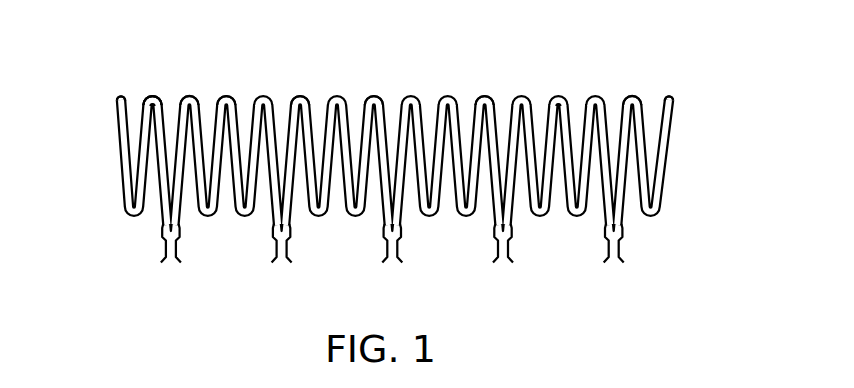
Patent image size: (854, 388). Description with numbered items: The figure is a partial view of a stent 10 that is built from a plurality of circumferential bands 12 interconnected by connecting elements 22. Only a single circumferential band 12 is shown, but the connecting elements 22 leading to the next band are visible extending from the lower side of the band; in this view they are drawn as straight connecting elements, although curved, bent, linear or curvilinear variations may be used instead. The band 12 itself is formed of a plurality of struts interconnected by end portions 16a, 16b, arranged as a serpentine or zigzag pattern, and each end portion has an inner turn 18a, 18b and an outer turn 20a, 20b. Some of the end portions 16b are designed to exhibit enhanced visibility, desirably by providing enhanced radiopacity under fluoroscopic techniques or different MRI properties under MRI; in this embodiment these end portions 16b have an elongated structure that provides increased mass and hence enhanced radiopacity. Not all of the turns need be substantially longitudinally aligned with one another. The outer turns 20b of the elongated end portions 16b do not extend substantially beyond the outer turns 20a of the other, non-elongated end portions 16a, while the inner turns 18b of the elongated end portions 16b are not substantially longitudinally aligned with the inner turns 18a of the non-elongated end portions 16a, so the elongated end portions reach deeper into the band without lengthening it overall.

The stent 10 is at (571, 278).
The circumferential band 12 is at (716, 74).
The non-elongated end portion 16a is at (152, 94).
The elongated end portion 16b is at (191, 94).
The inner turn of non-elongated end portion 18a is at (152, 108).
The inner turn of elongated end portion 18b is at (559, 113).
The outer turn of non-elongated end portion 20a is at (149, 97).
The outer turn of elongated end portion 20b is at (228, 94).
The connecting element 22 is at (285, 247).